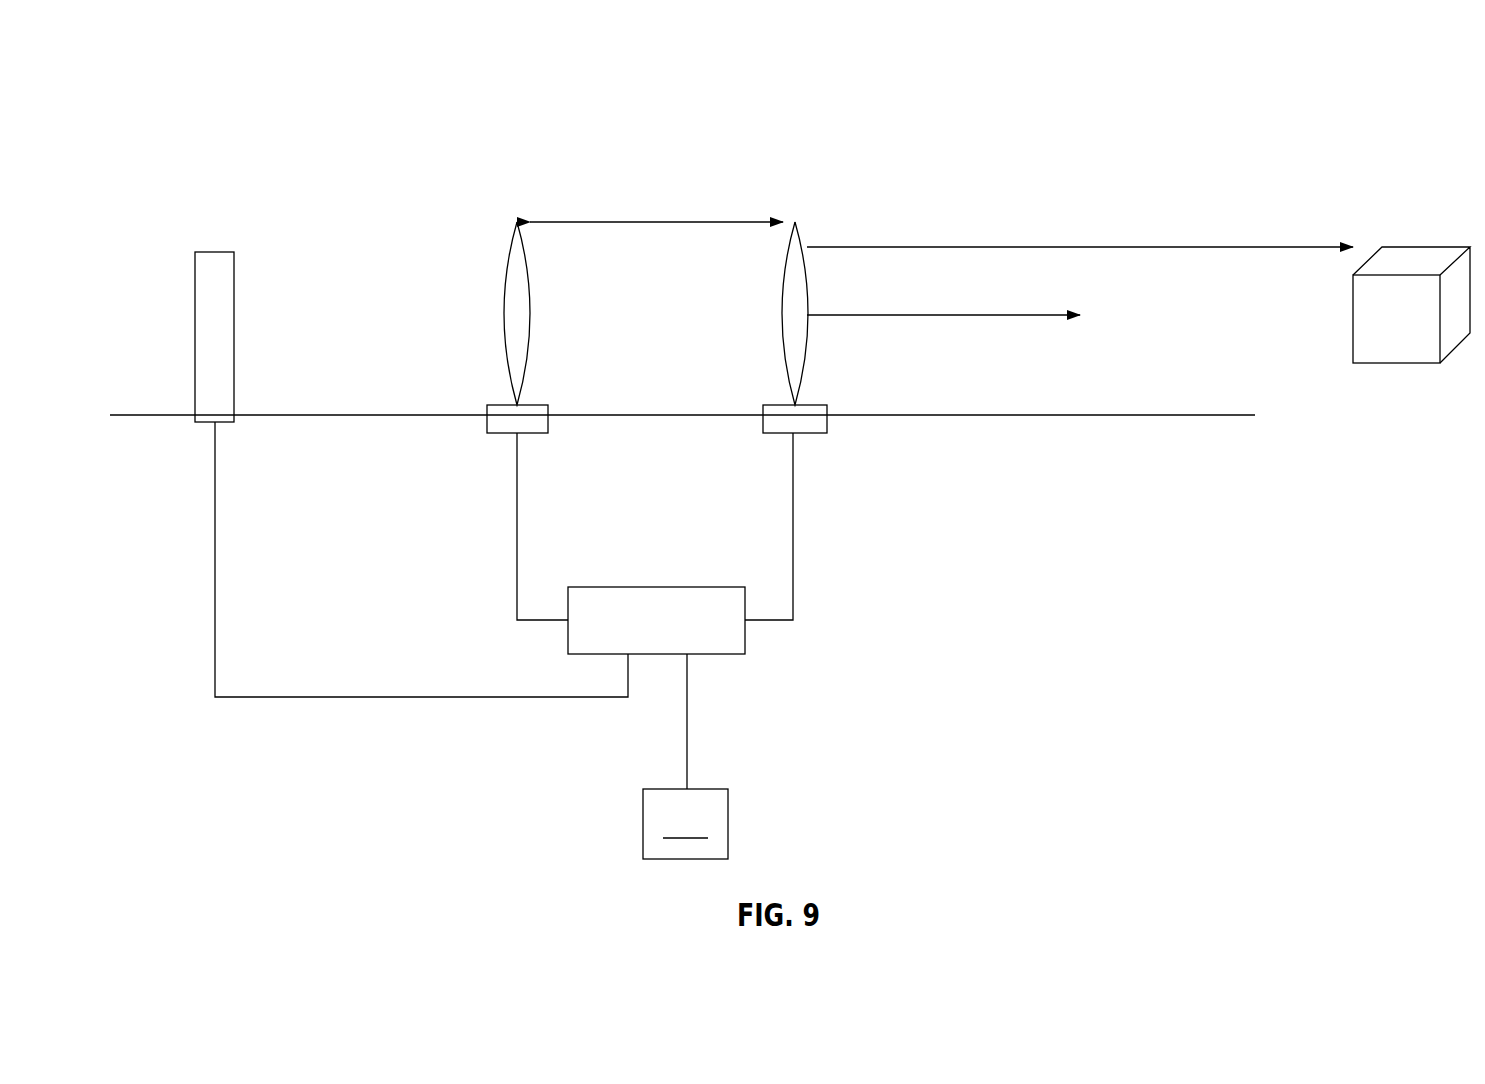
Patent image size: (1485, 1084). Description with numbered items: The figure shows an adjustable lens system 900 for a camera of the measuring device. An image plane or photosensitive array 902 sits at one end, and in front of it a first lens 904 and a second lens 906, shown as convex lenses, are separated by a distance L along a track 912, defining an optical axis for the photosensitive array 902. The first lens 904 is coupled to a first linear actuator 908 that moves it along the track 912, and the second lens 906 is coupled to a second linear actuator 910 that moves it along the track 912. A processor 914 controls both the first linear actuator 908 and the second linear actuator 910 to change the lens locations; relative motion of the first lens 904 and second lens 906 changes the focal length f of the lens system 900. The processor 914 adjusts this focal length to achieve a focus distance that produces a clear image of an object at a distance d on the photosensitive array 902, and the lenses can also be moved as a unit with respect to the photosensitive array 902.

The adjustable lens system 900 is at (182, 110).
The photosensitive array 902 is at (213, 251).
The first lens 904 is at (518, 221).
The second lens 906 is at (795, 221).
The first linear actuator 908 is at (496, 436).
The second linear actuator 910 is at (780, 436).
The track 912 is at (1046, 420).
The processor 914 is at (725, 657).